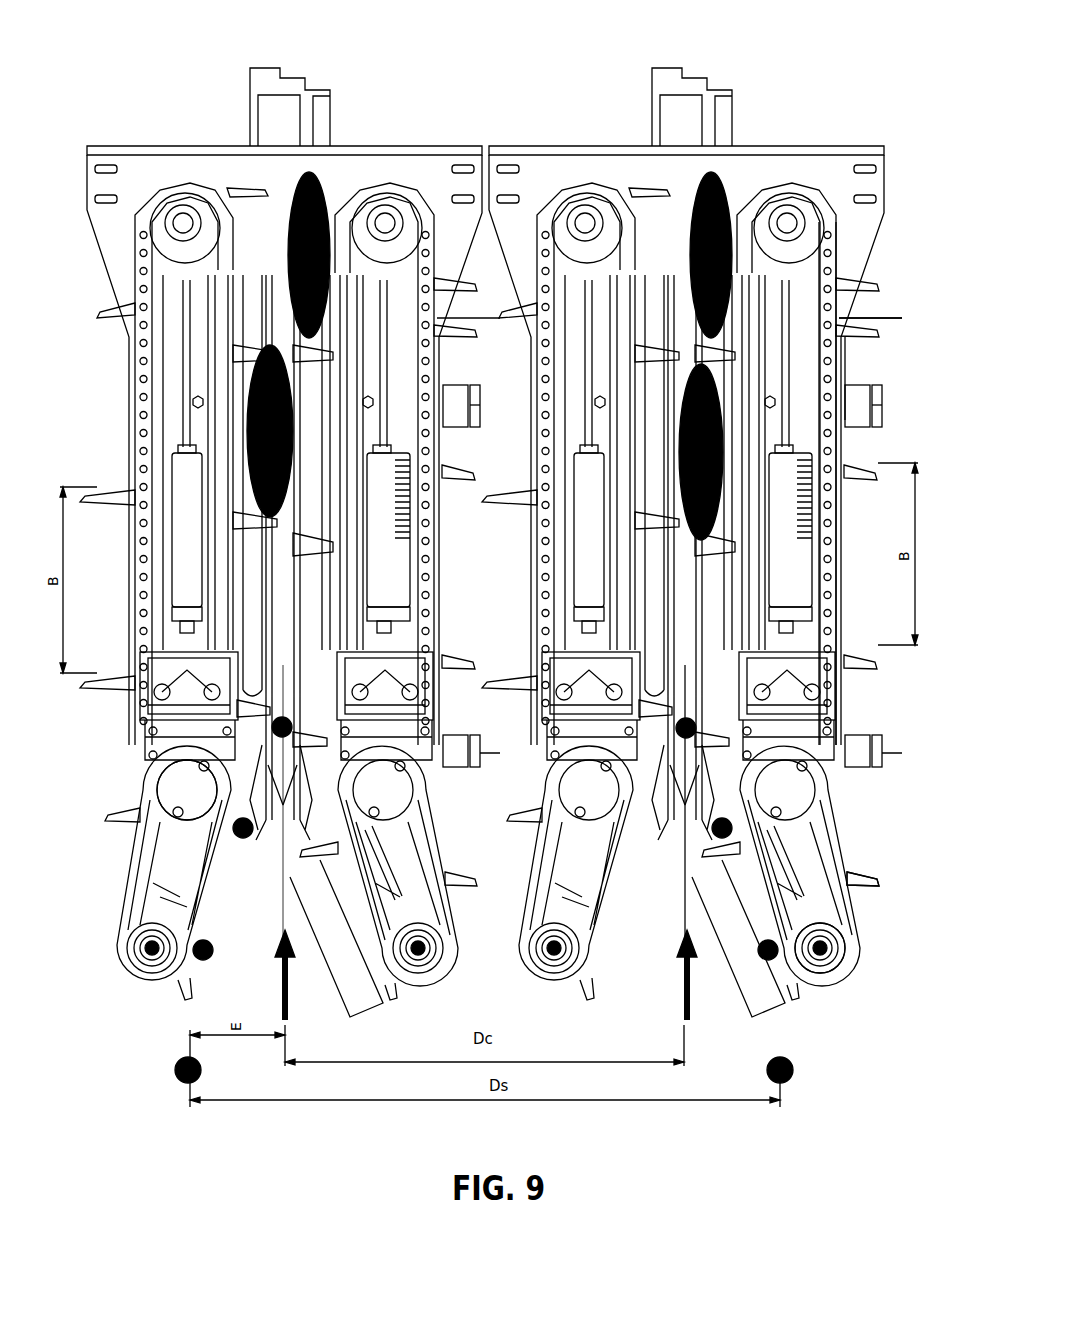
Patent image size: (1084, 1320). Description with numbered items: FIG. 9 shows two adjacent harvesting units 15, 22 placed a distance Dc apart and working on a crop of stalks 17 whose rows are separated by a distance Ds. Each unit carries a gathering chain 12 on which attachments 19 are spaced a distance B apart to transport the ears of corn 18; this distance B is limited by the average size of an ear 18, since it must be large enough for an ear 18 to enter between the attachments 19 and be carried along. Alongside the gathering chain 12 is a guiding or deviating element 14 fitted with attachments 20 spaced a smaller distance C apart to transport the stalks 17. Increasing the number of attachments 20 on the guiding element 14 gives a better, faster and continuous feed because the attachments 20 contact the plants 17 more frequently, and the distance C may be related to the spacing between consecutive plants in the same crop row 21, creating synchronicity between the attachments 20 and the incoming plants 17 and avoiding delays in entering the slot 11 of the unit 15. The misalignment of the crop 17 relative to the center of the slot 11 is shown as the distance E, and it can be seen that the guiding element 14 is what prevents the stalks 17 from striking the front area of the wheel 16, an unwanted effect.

The harvesting unit 22 is at (386, 146).
The harvesting unit 15 is at (791, 144).
The attachments 19 is at (855, 320).
The ear of corn 18 is at (733, 438).
The gathering chain 12 is at (845, 592).
The wheel 16 is at (178, 789).
The stalks 17 is at (178, 1072).
The attachments 20 is at (880, 878).
The guiding element 14 is at (852, 922).
The crop row 21 is at (798, 1071).
The slot 11 is at (678, 785).